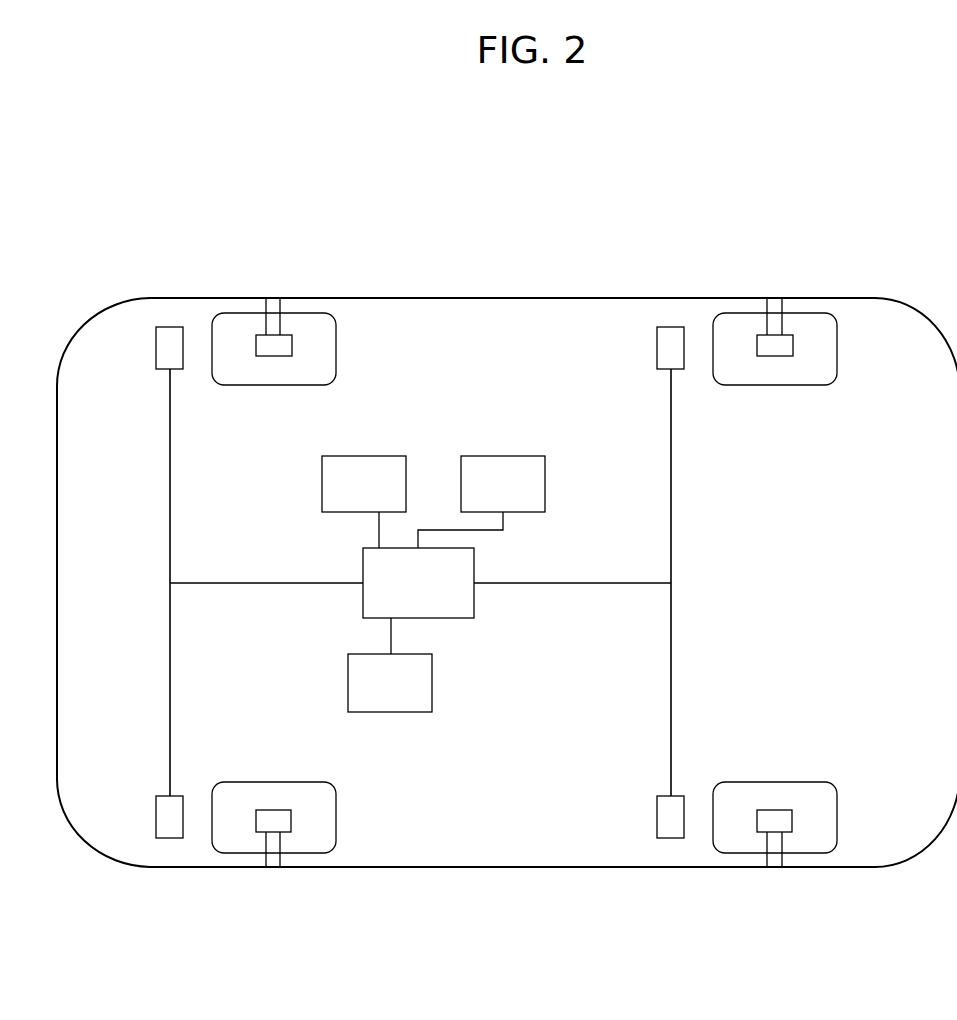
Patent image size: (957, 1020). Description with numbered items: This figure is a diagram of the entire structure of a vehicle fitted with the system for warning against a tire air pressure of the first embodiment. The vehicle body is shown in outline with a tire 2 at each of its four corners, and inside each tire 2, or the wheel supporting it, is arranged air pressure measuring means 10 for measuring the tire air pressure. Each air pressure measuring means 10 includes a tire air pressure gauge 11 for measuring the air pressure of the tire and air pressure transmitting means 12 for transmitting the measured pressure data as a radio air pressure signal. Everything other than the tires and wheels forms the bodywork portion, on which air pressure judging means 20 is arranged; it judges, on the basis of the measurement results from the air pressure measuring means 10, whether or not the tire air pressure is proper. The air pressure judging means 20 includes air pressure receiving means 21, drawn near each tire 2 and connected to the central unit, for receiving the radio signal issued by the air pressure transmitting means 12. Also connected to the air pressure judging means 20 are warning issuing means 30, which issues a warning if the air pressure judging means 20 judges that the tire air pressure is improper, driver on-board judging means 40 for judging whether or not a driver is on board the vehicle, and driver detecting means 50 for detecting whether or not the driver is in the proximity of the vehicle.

The tire 2 is at (338, 348).
The air pressure measuring means 10 is at (243, 350).
The tire air pressure gauge 11 is at (272, 318).
The air pressure transmitting means 12 is at (272, 357).
The air pressure judging means 20 is at (490, 654).
The air pressure receiving means 21 is at (170, 327).
The warning issuing means 30 is at (504, 456).
The driver on-board judging means 40 is at (409, 713).
The driver detecting means 50 is at (377, 456).